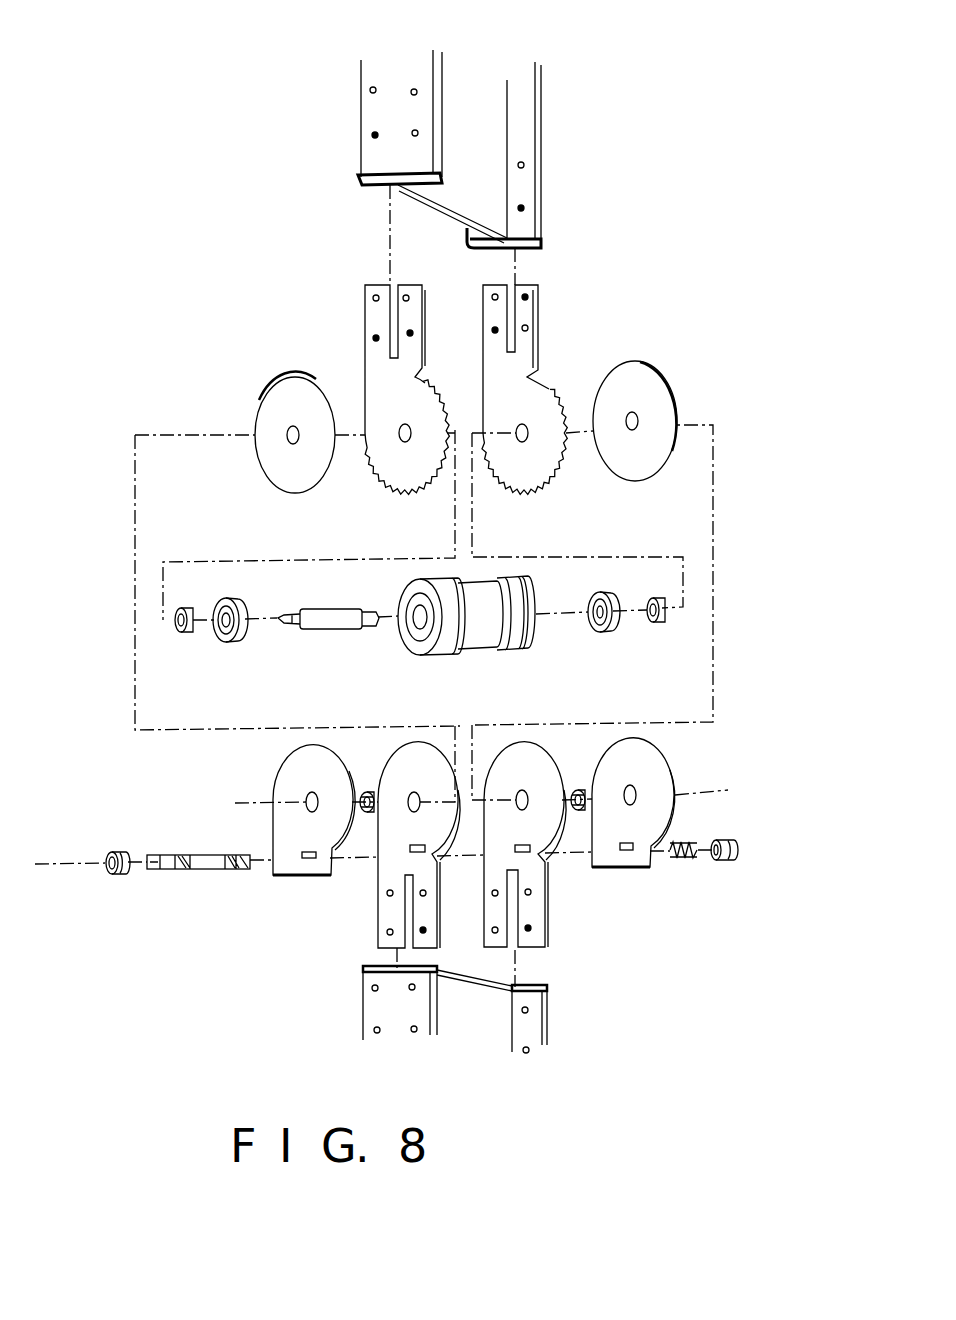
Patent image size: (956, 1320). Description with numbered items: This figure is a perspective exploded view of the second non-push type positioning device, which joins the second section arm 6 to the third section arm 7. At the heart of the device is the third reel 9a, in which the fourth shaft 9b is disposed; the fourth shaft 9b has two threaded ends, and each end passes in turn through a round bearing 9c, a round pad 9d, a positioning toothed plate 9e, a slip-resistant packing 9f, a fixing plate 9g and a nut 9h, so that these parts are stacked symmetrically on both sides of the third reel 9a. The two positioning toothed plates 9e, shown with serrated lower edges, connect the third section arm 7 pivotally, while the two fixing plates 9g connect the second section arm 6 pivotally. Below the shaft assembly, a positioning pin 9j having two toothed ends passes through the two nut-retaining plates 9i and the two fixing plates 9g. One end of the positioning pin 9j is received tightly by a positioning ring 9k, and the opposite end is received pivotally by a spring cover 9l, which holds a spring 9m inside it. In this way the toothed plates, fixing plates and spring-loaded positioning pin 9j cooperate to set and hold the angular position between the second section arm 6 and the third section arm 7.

The second section arm 6 is at (373, 1010).
The third section arm 7 is at (372, 88).
The third reel 9a is at (522, 627).
The fourth shaft 9b is at (343, 627).
The round bearing 9c is at (609, 630).
The round pad 9d is at (660, 622).
The positioning toothed plate 9e is at (543, 398).
The slip-resistant packing 9f is at (647, 388).
The fixing plate 9g is at (537, 906).
The nut 9h is at (577, 790).
The nut-retaining plate 9i is at (650, 868).
The positioning pin 9j is at (207, 866).
The positioning ring 9k is at (106, 872).
The spring cover 9l is at (740, 849).
The spring 9m is at (700, 856).